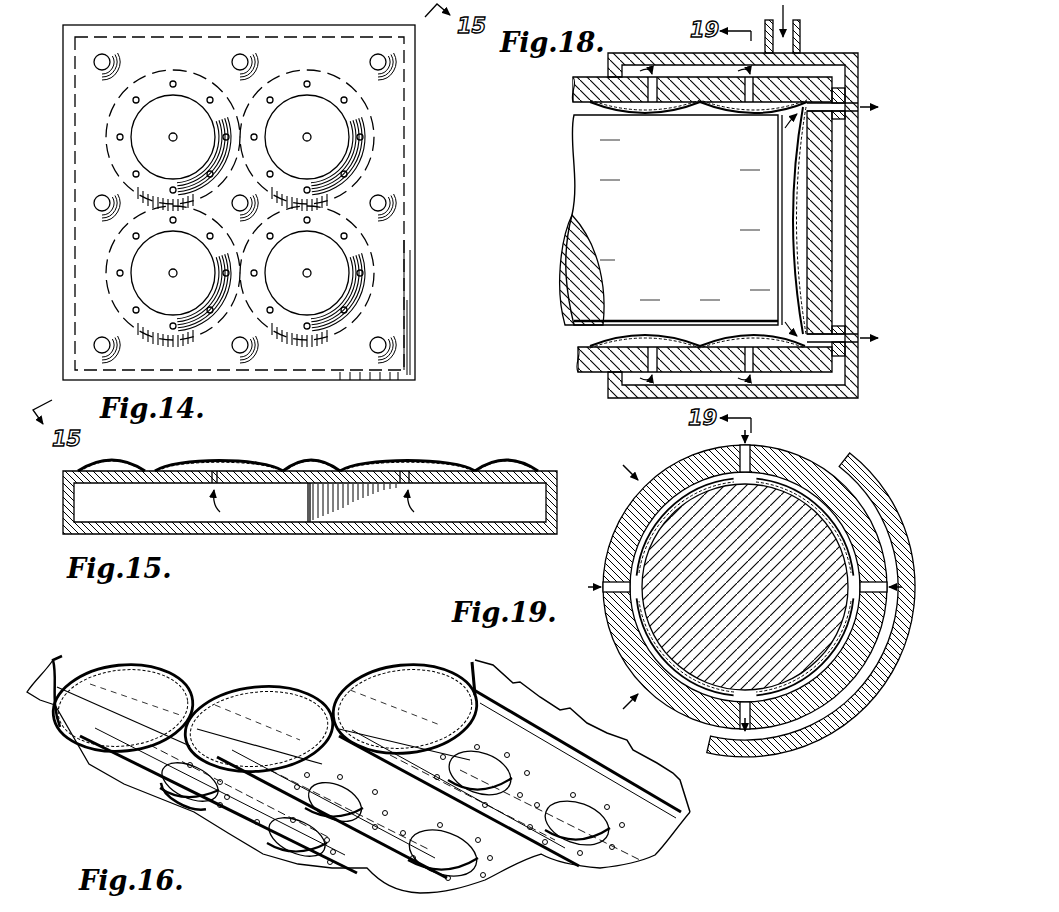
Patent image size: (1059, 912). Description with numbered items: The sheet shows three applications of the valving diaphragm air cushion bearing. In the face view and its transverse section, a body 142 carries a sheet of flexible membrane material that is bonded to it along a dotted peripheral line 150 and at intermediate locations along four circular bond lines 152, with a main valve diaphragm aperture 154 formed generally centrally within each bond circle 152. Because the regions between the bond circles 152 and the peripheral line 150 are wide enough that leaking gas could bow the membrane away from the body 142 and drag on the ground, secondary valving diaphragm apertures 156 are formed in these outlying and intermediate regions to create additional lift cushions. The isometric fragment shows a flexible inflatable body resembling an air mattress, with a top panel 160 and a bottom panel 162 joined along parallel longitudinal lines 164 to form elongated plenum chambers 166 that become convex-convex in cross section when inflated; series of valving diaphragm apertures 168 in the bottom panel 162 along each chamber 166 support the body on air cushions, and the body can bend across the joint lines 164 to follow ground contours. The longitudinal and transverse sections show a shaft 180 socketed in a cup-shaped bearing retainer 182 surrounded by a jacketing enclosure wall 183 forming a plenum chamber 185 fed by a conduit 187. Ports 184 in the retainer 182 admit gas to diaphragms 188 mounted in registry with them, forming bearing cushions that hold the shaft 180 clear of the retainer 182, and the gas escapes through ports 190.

In FIG. 14, the body 142 is at (276, 22).
In FIG. 15, the body 142 is at (480, 460).
In FIG. 14, the dotted peripheral line 150 is at (403, 160).
In FIG. 14, the circular bond lines 152 is at (345, 220).
In FIG. 14, the valve diaphragm apertures 154 is at (310, 110).
In FIG. 15, the valve diaphragm apertures 154 is at (238, 467).
In FIG. 14, the secondary valving diaphragm apertures 156 is at (384, 55).
In FIG. 15, the secondary valving diaphragm apertures 156 is at (118, 459).
In FIG. 16, the top panel 160 is at (358, 670).
In FIG. 16, the bottom panel 162 is at (474, 730).
In FIG. 16, the parallel joint lines 164 is at (195, 692).
In FIG. 16, the elongated plenum chambers 166 is at (122, 703).
In FIG. 16, the valving diaphragm apertures 168 is at (540, 765).
In FIG. 18, the shaft 180 is at (571, 205).
In FIG. 19, the shaft 180 is at (823, 530).
In FIG. 18, the bearing retainer 182 is at (830, 84).
In FIG. 19, the bearing retainer 182 is at (810, 450).
In FIG. 18, the jacketing enclosure wall 183 is at (641, 52).
In FIG. 19, the jacketing enclosure wall 183 is at (837, 740).
In FIG. 18, the ports 184 is at (830, 223).
In FIG. 18, the plenum chamber 185 is at (835, 253).
In FIG. 18, the conduit 187 is at (801, 37).
In FIG. 18, the diaphragms 188 is at (692, 72).
In FIG. 19, the diaphragms 188 is at (638, 647).
In FIG. 18, the escape ports 190 is at (855, 112).